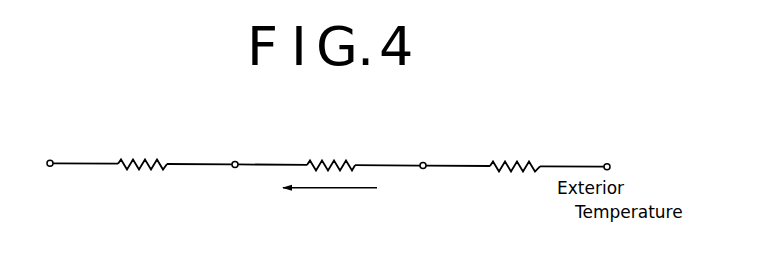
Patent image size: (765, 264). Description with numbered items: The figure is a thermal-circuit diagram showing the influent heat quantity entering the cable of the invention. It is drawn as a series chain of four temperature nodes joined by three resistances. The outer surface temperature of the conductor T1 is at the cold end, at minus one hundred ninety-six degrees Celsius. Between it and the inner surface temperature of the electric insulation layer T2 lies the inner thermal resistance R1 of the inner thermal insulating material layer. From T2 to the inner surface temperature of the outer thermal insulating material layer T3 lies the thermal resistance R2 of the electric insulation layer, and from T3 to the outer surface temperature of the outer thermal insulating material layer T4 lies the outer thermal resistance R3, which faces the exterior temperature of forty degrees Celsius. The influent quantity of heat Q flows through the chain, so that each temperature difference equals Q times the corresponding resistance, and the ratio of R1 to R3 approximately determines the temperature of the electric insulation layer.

The outer surface temperature of the conductor T1 is at (52, 149).
The inner surface temperature of electric insulation layer T2 is at (228, 150).
The inner surface temperature of outer thermal insulating material layer T3 is at (417, 151).
The outer surface temperature of outer thermal insulating material layer T4 is at (601, 152).
The inner thermal resistance R1 is at (142, 151).
The thermal resistance of electric insulation layer R2 is at (331, 152).
The outer thermal resistance R3 is at (515, 153).
The influent quantity of heat Q is at (329, 198).